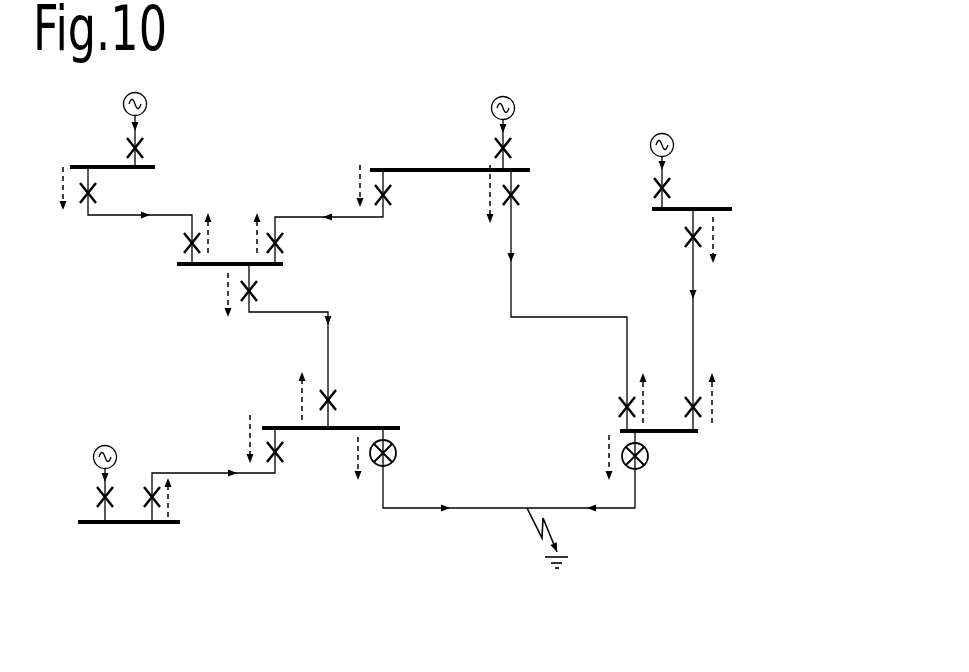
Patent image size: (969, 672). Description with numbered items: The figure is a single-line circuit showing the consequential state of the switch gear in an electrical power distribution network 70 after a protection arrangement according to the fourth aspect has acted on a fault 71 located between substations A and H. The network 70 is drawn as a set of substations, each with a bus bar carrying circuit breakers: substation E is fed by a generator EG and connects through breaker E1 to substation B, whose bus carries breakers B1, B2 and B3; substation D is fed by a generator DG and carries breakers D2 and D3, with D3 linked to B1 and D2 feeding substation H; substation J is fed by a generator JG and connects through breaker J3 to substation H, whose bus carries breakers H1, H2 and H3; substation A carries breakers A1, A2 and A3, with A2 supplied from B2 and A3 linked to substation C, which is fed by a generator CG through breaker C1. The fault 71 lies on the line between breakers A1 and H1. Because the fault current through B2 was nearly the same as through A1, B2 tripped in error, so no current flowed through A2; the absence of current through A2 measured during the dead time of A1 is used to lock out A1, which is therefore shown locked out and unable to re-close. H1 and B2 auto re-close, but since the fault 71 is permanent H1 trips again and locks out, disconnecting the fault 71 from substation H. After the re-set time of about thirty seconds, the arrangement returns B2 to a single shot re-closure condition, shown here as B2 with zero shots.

The electrical power distribution network 70 is at (802, 252).
The fault 71 is at (576, 552).
The generator of substation E EG is at (115, 130).
The circuit breaker E1 is at (105, 195).
The circuit breaker B1 is at (291, 245).
The circuit breaker B2 is at (319, 294).
The circuit breaker B3 is at (173, 245).
The generator of substation D DG is at (484, 134).
The circuit breaker D2 is at (531, 199).
The circuit breaker D3 is at (402, 199).
The generator of substation J JG is at (679, 172).
The circuit breaker J3 is at (676, 239).
The circuit breaker H1 is at (714, 458).
The circuit breaker H2 is at (607, 412).
The circuit breaker H3 is at (719, 412).
The circuit breaker A1 is at (442, 467).
The circuit breaker A2 is at (346, 402).
The circuit breaker A3 is at (294, 452).
The generator of substation C CG is at (85, 484).
The circuit breaker C1 is at (176, 502).